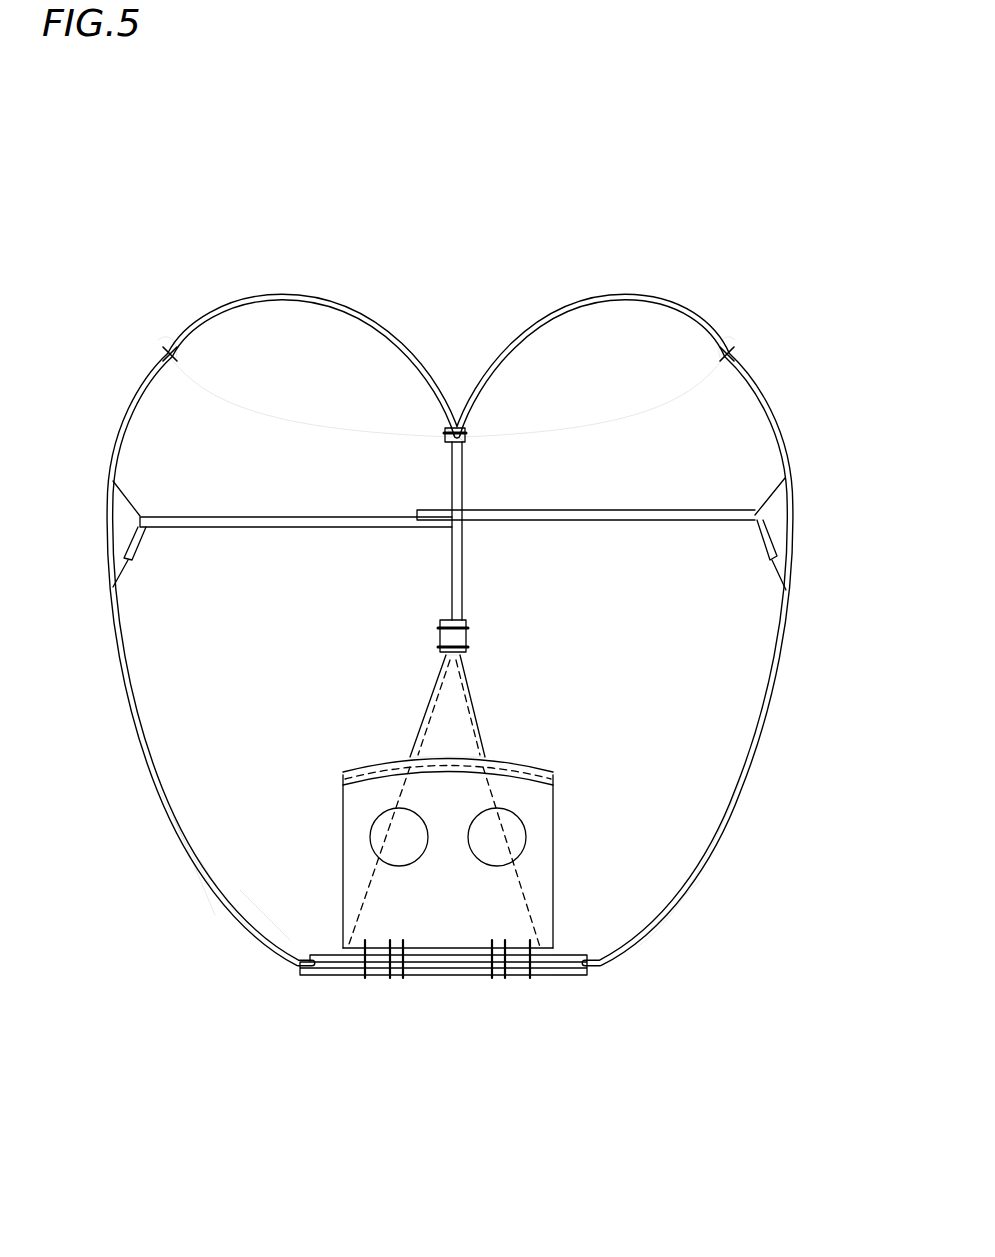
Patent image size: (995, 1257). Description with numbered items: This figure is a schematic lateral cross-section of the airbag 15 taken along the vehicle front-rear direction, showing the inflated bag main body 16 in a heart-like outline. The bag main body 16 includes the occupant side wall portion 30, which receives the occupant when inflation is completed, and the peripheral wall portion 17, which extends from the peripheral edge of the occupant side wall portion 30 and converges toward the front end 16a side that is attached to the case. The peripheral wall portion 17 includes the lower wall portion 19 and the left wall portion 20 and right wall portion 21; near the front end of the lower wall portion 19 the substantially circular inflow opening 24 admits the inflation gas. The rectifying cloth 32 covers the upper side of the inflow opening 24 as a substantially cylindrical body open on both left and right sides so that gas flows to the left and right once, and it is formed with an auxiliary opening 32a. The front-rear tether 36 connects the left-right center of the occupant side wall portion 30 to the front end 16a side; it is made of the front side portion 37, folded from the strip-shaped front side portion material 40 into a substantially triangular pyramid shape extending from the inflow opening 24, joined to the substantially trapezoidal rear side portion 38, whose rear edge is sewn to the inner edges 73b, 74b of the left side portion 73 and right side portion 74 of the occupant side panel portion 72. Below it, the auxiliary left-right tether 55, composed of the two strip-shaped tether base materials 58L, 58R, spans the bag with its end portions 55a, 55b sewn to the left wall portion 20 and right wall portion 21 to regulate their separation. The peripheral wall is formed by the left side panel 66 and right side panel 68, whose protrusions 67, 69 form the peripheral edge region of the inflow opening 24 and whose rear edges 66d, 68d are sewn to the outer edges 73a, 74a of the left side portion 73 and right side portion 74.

The airbag 15 is at (808, 205).
The bag main body 16 is at (187, 912).
The front end 16a is at (565, 978).
The peripheral wall portion 17 is at (693, 890).
The lower wall portion 19 is at (265, 893).
The left wall portion 20 is at (735, 800).
The right wall portion 21 is at (150, 790).
The inflow opening 24 is at (447, 978).
The occupant side wall portion 30 is at (570, 285).
The rectifying cloth 32 is at (583, 780).
The auxiliary opening 32a is at (367, 835).
The front-rear tether 36 is at (328, 548).
The front side portion 37 is at (425, 700).
The rear side portion 38 is at (450, 590).
The front side portion material 40 is at (457, 727).
The auxiliary left-right tether 55 is at (450, 500).
The end portion 55a is at (752, 560).
The end portion 55b is at (140, 560).
The tether base material 58R is at (272, 517).
The tether base material 58L is at (612, 520).
The left side panel 66 is at (720, 830).
The rear edge 66d is at (730, 367).
The protrusion 67 is at (535, 975).
The right side panel 68 is at (170, 818).
The rear edge 68d is at (163, 367).
The protrusion 69 is at (345, 975).
The occupant side panel portion 72 is at (385, 183).
The left side portion 73 is at (520, 318).
The outer edge 73a is at (723, 358).
The inner edge 73b is at (465, 448).
The right side portion 74 is at (368, 318).
The outer edge 74a is at (172, 358).
The inner edge 74b is at (447, 448).